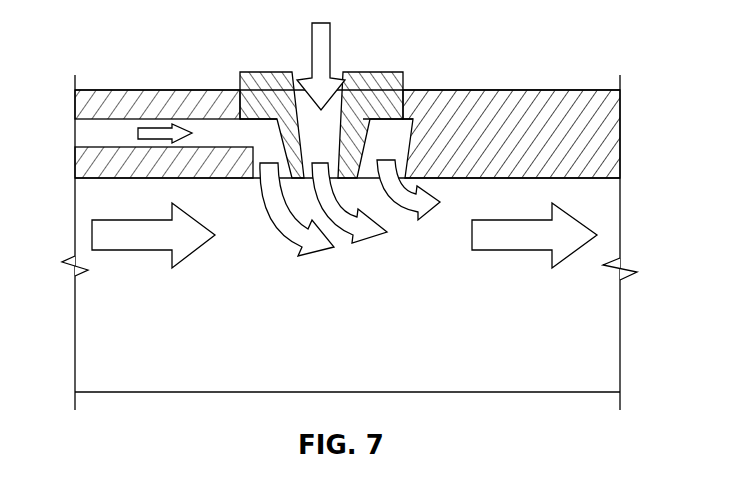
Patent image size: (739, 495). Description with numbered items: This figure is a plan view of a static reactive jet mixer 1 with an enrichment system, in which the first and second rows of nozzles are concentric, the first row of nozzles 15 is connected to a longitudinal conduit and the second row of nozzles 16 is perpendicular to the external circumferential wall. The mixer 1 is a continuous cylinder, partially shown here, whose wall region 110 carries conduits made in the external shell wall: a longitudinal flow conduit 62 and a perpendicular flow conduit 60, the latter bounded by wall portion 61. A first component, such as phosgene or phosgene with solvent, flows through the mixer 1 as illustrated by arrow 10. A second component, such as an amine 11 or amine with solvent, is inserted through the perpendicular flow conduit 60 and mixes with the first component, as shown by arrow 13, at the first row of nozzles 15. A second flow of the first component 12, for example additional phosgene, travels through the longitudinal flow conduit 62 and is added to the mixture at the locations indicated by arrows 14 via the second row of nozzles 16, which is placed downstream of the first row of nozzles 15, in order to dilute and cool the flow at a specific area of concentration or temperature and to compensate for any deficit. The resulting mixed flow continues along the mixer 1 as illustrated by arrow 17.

The static reactive jet mixer 1 is at (557, 89).
The arrow 10 is at (132, 252).
The amine 11 is at (331, 40).
The second flow of the first component 12 is at (162, 126).
The arrow 13 is at (341, 243).
The arrow 14 is at (297, 254).
The first row of nozzles 15 is at (238, 182).
The second row of nozzles 16 is at (302, 70).
The arrow 17 is at (512, 252).
The perpendicular flow conduit 60 is at (338, 95).
The insert wall 61 is at (415, 92).
The longitudinal flow conduit 62 is at (212, 126).
The housing 110 is at (605, 133).